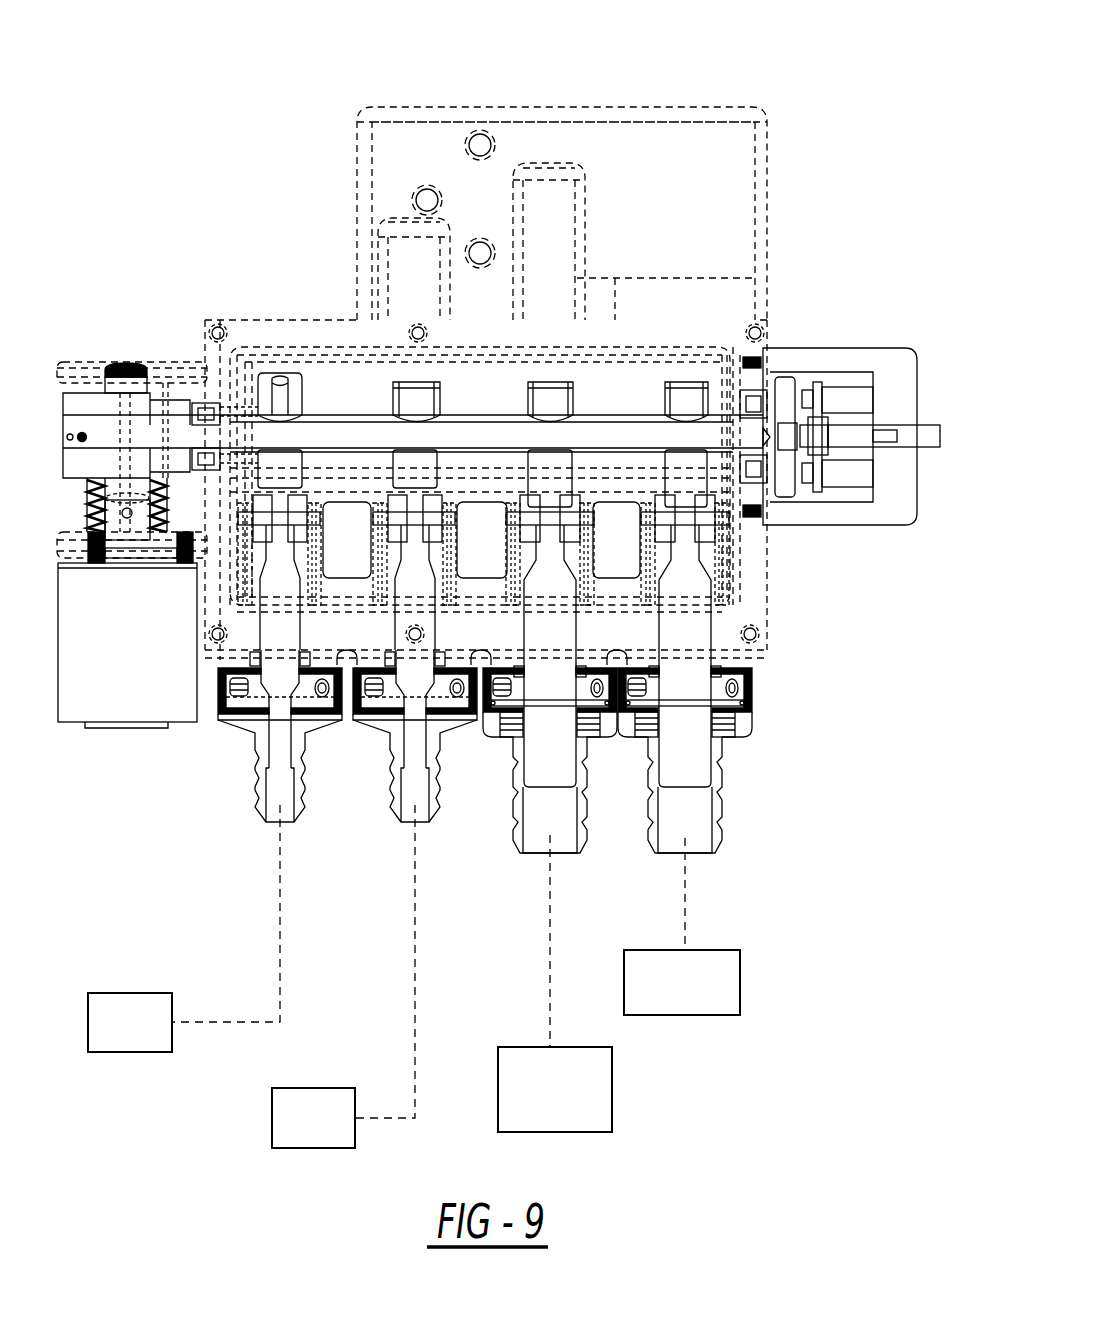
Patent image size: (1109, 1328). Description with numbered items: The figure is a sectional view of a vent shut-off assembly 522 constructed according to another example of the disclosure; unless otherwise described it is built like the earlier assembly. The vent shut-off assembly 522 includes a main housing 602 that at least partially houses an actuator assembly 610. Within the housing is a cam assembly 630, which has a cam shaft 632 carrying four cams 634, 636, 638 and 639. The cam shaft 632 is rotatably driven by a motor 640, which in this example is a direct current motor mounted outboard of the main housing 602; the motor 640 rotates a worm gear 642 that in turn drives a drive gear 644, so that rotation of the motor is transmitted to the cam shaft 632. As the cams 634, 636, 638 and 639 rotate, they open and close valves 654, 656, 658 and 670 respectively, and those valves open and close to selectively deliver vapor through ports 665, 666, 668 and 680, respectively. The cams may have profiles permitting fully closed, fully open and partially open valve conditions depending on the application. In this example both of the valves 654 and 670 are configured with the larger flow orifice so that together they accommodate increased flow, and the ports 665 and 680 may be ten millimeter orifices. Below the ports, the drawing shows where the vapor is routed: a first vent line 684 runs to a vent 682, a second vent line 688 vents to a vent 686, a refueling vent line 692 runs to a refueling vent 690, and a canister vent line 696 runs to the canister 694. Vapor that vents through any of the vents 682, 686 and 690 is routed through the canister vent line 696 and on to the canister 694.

The vent shut-off assembly 522 is at (846, 111).
The main housing 602 is at (615, 555).
The actuator assembly 610 is at (101, 287).
The cam assembly 630 is at (643, 254).
The cam shaft 632 is at (450, 430).
The cam 634 is at (555, 460).
The cam 636 is at (415, 457).
The cam 638 is at (282, 460).
The cam 639 is at (690, 472).
The motor 640 is at (113, 707).
The worm gear 642 is at (112, 520).
The drive gear 644 is at (132, 362).
The valve 654 is at (553, 633).
The valve 656 is at (412, 725).
The valve 658 is at (278, 750).
The port 665 is at (575, 815).
The port 666 is at (432, 795).
The port 668 is at (265, 795).
The valve 670 is at (695, 762).
The port 680 is at (722, 808).
The vent 682 is at (152, 1052).
The first vent line 684 is at (280, 942).
The vent 686 is at (325, 1148).
The second vent line 688 is at (415, 893).
The refueling vent 690 is at (570, 1132).
The refueling vent line 692 is at (550, 963).
The canister 694 is at (695, 1015).
The canister vent line 696 is at (685, 900).